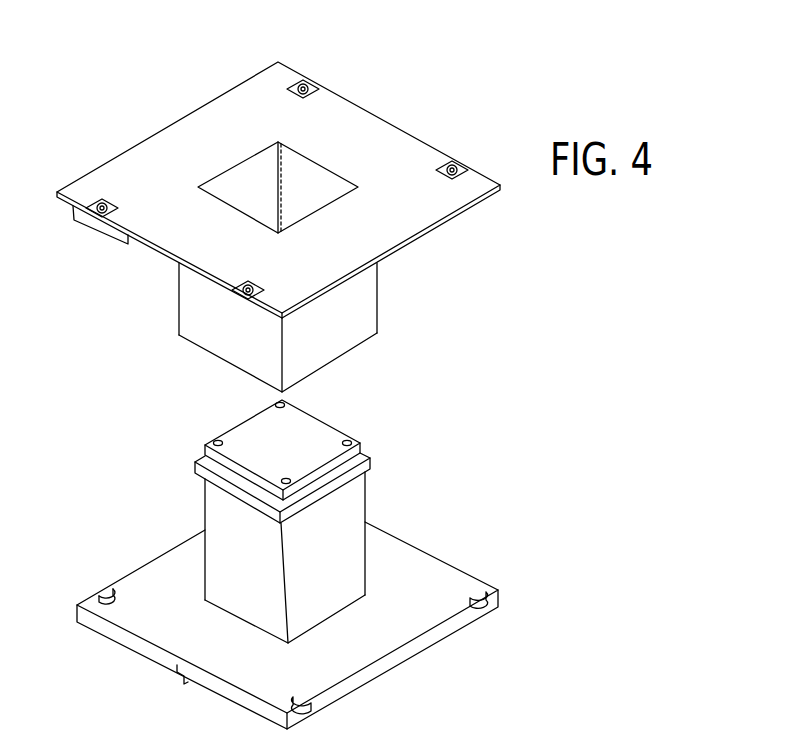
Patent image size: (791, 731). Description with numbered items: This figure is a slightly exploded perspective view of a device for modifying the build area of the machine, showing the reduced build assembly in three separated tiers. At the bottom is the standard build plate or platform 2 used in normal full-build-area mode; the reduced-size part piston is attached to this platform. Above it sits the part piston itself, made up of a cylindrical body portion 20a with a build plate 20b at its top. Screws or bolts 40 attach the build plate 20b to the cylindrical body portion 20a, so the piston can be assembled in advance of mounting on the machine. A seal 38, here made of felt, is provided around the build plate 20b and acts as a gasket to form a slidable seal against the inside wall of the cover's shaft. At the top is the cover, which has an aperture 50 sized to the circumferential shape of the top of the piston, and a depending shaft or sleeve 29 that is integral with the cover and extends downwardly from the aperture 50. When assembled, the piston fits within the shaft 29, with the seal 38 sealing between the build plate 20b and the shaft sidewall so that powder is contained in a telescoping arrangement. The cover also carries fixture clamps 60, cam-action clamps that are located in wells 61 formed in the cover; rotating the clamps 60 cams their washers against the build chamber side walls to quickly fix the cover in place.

The standard build plate or platform 2 is at (127, 620).
The cylindrical body portion 20a is at (205, 514).
The build plate 20b is at (336, 462).
The depending shaft or sleeve 29 is at (356, 317).
The seal 38 is at (179, 460).
The screws or bolts 40 is at (220, 437).
The aperture 50 is at (315, 190).
The fixture clamps 60 is at (100, 189).
The wells 61 is at (113, 233).